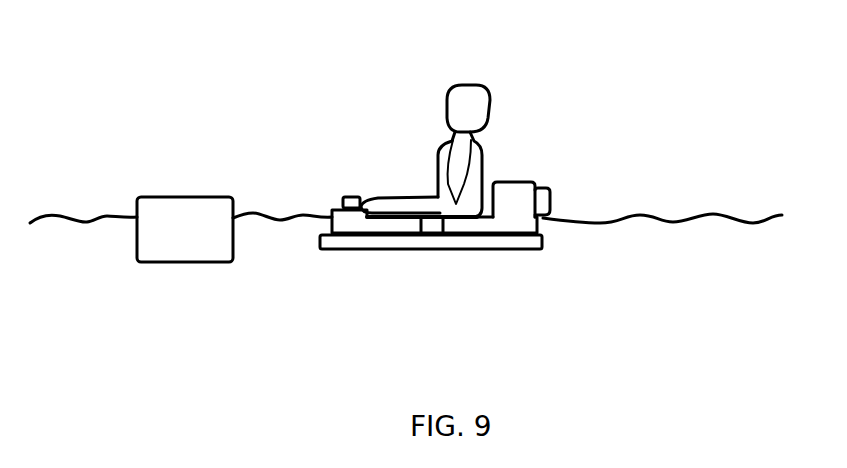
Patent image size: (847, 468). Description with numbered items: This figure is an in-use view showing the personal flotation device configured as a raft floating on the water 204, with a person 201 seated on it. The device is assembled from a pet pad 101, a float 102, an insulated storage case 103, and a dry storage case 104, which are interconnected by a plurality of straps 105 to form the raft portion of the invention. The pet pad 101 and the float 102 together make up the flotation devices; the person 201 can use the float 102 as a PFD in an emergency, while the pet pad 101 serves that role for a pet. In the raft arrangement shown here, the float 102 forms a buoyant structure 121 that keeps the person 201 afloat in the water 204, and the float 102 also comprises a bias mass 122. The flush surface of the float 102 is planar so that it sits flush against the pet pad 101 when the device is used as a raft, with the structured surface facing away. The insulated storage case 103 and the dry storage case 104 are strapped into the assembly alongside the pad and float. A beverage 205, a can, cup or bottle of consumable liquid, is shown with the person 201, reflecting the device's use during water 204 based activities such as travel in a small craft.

The pet pad 101 is at (525, 250).
The float 102 is at (403, 223).
The insulated storage case 103 is at (202, 217).
The dry storage case 104 is at (550, 203).
The plurality of straps 105 is at (432, 223).
The buoyant structure 121 is at (463, 228).
The bias mass 122 is at (520, 200).
The person 201 is at (472, 110).
The water 204 is at (738, 217).
The beverage 205 is at (346, 195).